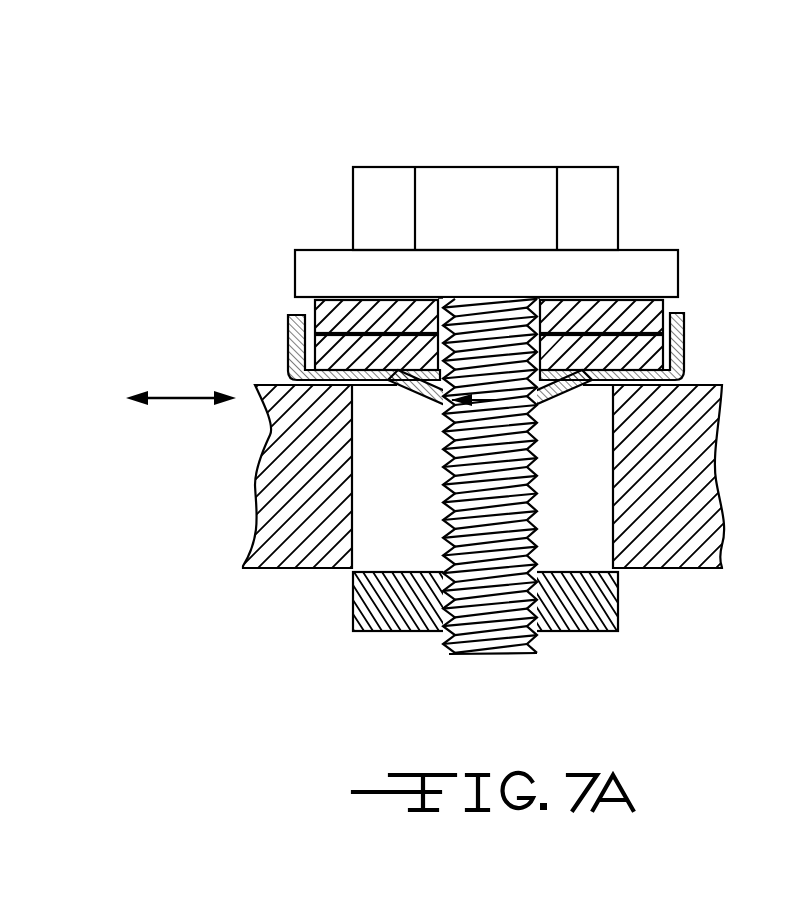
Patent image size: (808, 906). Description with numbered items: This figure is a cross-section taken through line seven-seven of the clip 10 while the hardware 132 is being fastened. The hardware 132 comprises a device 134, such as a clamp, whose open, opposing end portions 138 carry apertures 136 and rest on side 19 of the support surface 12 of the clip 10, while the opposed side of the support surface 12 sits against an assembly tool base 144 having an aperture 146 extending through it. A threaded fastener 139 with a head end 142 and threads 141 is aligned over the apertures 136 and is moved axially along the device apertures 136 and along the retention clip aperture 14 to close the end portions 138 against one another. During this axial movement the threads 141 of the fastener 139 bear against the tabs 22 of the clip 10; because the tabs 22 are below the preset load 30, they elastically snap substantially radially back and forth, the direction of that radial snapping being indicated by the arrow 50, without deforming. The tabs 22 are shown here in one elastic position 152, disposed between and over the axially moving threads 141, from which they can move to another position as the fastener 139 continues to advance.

The clip 10 is at (288, 346).
The support surface 12 is at (472, 304).
The retention clip aperture 14 is at (470, 400).
The side 19 is at (325, 296).
The tabs 22 is at (412, 397).
The preset load 30 is at (470, 400).
The direction of movement 50 is at (177, 400).
The hardware 132 is at (614, 330).
The device 134 is at (659, 311).
The apertures 136 is at (538, 303).
The end portions 138 is at (430, 353).
The threaded fastener 139 is at (438, 188).
The threads 141 is at (498, 400).
The head end 142 is at (472, 180).
The assembly tool base 144 is at (375, 604).
The aperture 146 is at (533, 600).
The position 152 is at (442, 412).